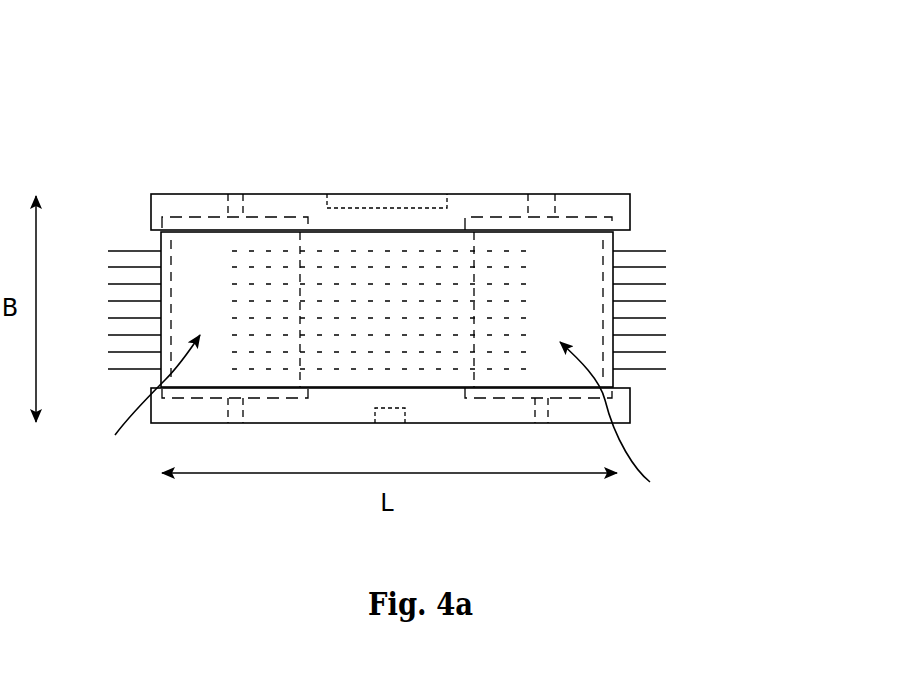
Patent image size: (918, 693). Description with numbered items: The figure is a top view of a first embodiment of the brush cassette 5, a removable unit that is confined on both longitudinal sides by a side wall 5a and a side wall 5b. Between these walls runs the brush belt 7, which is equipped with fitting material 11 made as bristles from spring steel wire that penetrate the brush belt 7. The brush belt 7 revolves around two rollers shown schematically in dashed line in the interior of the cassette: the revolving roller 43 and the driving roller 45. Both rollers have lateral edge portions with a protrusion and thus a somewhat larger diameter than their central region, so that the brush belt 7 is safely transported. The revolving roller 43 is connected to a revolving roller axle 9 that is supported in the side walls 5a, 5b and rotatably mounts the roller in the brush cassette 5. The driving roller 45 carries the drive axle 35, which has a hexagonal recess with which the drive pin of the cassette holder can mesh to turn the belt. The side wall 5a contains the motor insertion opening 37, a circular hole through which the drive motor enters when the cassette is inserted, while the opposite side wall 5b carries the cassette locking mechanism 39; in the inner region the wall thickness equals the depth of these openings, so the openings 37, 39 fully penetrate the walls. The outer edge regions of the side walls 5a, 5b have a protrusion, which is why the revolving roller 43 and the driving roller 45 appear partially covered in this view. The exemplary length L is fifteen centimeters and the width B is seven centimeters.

The brush cassette 5 is at (430, 277).
The side wall 5a is at (439, 137).
The side wall 5b is at (450, 466).
The brush belt 7 is at (340, 290).
The revolving roller axle 9 is at (235, 194).
The fitting material 11 is at (667, 284).
The drive axle 35 is at (548, 190).
The motor insertion opening 37 is at (378, 194).
The cassette locking mechanism 39 is at (396, 426).
The revolving roller 43 is at (139, 407).
The driving roller 45 is at (616, 428).